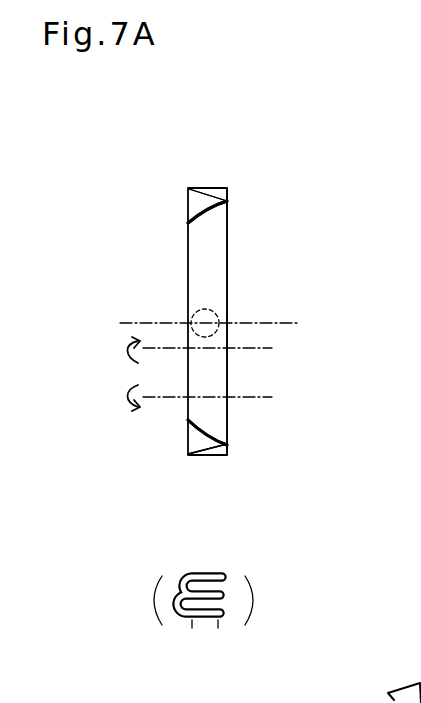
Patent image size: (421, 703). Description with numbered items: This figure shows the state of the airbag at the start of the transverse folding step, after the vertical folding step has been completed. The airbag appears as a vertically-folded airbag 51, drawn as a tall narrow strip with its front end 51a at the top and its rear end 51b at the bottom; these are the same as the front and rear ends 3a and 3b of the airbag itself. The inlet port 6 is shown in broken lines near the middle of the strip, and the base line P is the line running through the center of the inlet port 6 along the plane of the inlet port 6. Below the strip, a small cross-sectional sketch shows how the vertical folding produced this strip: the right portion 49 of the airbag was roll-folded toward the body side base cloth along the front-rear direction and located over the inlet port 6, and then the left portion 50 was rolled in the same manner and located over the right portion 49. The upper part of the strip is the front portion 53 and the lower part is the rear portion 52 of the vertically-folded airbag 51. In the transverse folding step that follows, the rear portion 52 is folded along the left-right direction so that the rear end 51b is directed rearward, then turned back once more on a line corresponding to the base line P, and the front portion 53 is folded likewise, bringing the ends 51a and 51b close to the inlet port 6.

The vertically-folded airbag 51 is at (228, 173).
The front portion 53 is at (232, 213).
The rear portion 52 is at (232, 420).
The front end 51a is at (207, 188).
The front end 3a is at (187, 153).
The rear end 51b is at (208, 457).
The rear end 3b is at (267, 475).
The base line P is at (274, 323).
The inlet port 6 is at (208, 309).
The left portion 50 is at (196, 568).
The right portion 49 is at (228, 604).